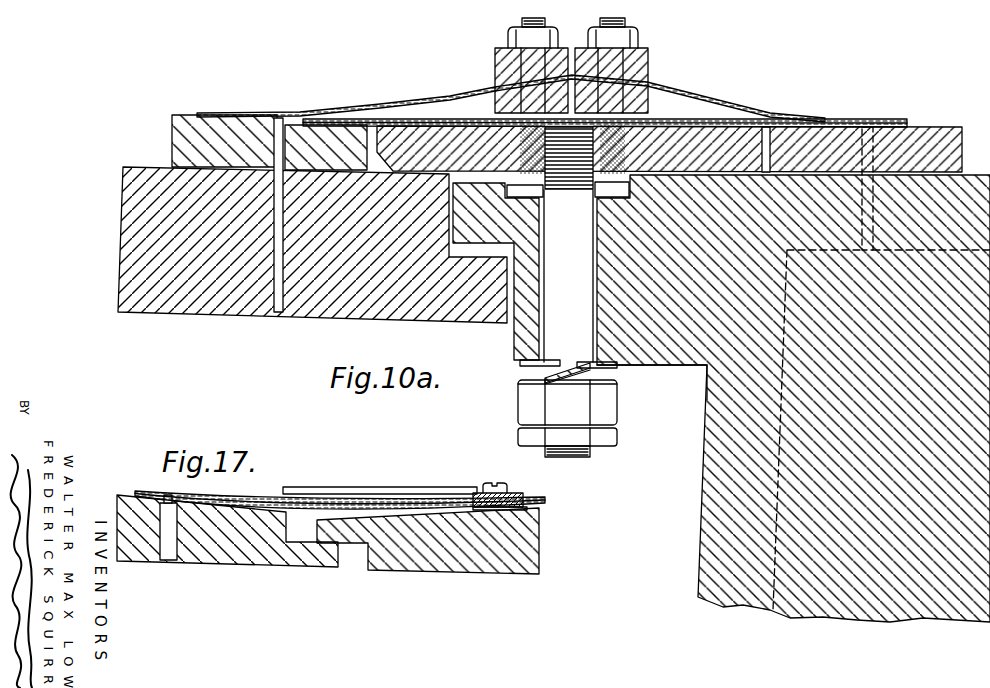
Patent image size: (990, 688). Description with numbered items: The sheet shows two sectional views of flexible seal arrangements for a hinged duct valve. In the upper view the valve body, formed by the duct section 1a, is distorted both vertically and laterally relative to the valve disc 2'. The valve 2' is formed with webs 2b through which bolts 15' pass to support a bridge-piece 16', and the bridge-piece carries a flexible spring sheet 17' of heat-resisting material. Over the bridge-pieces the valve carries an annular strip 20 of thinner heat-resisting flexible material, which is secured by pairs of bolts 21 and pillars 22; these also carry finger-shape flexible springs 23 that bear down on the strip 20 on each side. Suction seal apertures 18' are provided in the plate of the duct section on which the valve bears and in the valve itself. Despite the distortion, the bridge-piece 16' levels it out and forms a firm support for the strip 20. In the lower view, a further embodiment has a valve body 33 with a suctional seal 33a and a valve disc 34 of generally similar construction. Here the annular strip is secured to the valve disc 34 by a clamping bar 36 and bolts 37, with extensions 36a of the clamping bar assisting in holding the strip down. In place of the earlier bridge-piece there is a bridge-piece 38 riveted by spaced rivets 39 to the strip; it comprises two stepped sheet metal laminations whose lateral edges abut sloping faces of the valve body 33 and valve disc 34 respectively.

In FIG. 10A, the duct section 1a is at (210, 304).
In FIG. 10A, the valve 2' is at (793, 398).
In FIG. 10A, the webs 2b is at (678, 360).
In FIG. 10A, the bolts 15' is at (501, 271).
In FIG. 10A, the bridge-piece 16' is at (669, 124).
In FIG. 10A, the flexible spring sheet 17' is at (326, 123).
In FIG. 10A, the suction seal apertures 18' is at (584, 226).
In FIG. 10A, the annular strip 20 is at (200, 113).
In FIG. 10A, the bolts 21 is at (513, 33).
In FIG. 10A, the pillars 22 is at (640, 70).
In FIG. 10A, the finger-shape flexible springs 23 is at (427, 98).
In FIG. 17, the valve body 33 is at (287, 564).
In FIG. 17, the suctional seal 33a is at (166, 558).
In FIG. 17, the valve disc 34 is at (541, 573).
In FIG. 17, the clamping bar 36 is at (523, 502).
In FIG. 17, the extensions 36a is at (392, 493).
In FIG. 17, the bolts 37 is at (490, 485).
In FIG. 17, the bridge-piece 38 is at (302, 496).
In FIG. 17, the rivets 39 is at (333, 501).